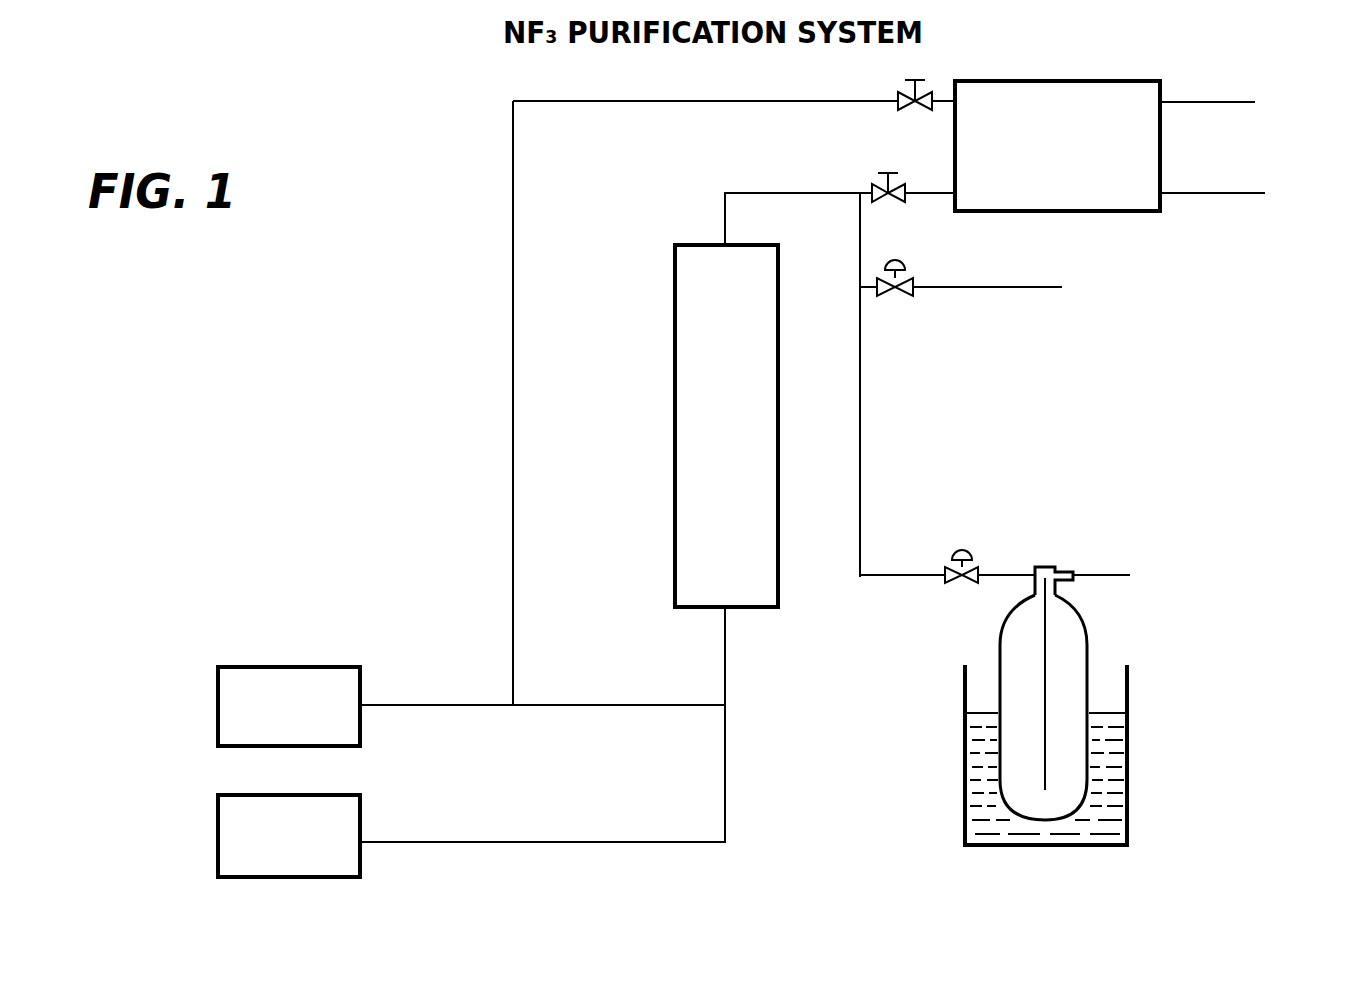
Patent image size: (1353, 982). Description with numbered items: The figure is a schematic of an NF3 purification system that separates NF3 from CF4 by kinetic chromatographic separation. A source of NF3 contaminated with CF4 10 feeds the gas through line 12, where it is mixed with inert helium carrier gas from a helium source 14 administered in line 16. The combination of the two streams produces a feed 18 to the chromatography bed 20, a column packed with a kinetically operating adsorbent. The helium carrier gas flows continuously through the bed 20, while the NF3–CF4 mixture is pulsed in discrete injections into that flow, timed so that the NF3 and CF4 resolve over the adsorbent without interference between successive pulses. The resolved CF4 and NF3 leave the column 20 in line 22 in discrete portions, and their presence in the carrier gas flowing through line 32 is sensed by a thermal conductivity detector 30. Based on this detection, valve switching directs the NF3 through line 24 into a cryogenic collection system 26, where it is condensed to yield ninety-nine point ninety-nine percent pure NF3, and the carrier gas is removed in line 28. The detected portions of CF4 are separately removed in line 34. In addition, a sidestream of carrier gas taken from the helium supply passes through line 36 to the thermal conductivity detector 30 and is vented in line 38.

The source of NF3 contaminated with CF4 10 is at (308, 793).
The line 12 is at (393, 840).
The helium source 14 is at (318, 664).
The line 16 is at (603, 703).
The feed 18 is at (727, 648).
The chromatography bed 20 is at (743, 409).
The line 22 is at (757, 191).
The line 24 is at (1000, 573).
The cryogenic collection system 26 is at (1129, 698).
The line 28 is at (1092, 573).
The thermal conductivity detector 30 is at (1162, 157).
The line 32 is at (1198, 194).
The line 34 is at (1055, 289).
The line 36 is at (740, 103).
The line 38 is at (1197, 101).